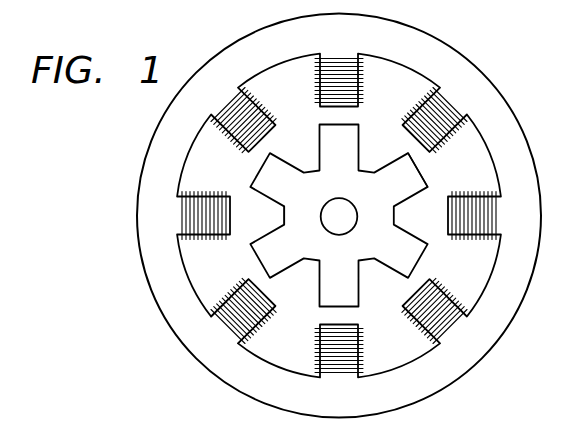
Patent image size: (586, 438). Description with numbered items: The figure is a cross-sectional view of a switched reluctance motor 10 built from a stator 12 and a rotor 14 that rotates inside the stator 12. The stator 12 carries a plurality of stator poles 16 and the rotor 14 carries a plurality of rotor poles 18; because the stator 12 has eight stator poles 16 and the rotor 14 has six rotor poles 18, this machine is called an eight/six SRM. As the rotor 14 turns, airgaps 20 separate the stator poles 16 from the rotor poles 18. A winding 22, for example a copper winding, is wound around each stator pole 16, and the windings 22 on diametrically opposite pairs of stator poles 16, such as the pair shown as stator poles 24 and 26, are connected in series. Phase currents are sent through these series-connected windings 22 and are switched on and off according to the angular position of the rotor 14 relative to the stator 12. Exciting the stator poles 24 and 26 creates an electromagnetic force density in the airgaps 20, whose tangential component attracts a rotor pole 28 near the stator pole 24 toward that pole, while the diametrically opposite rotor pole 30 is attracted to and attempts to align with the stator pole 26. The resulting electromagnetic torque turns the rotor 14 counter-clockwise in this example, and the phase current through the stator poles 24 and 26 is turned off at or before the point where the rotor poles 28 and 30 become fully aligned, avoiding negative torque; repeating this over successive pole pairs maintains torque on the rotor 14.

The switched reluctance motor 10 is at (118, 330).
The stator 12 is at (152, 156).
The rotor 14 is at (314, 172).
The stator poles 16 is at (203, 219).
The rotor poles 18 is at (262, 178).
The airgaps 20 is at (357, 321).
The winding 22 is at (425, 104).
The stator pole 24 is at (415, 134).
The stator pole 26 is at (257, 300).
The rotor pole 28 is at (425, 174).
The rotor pole 30 is at (264, 246).